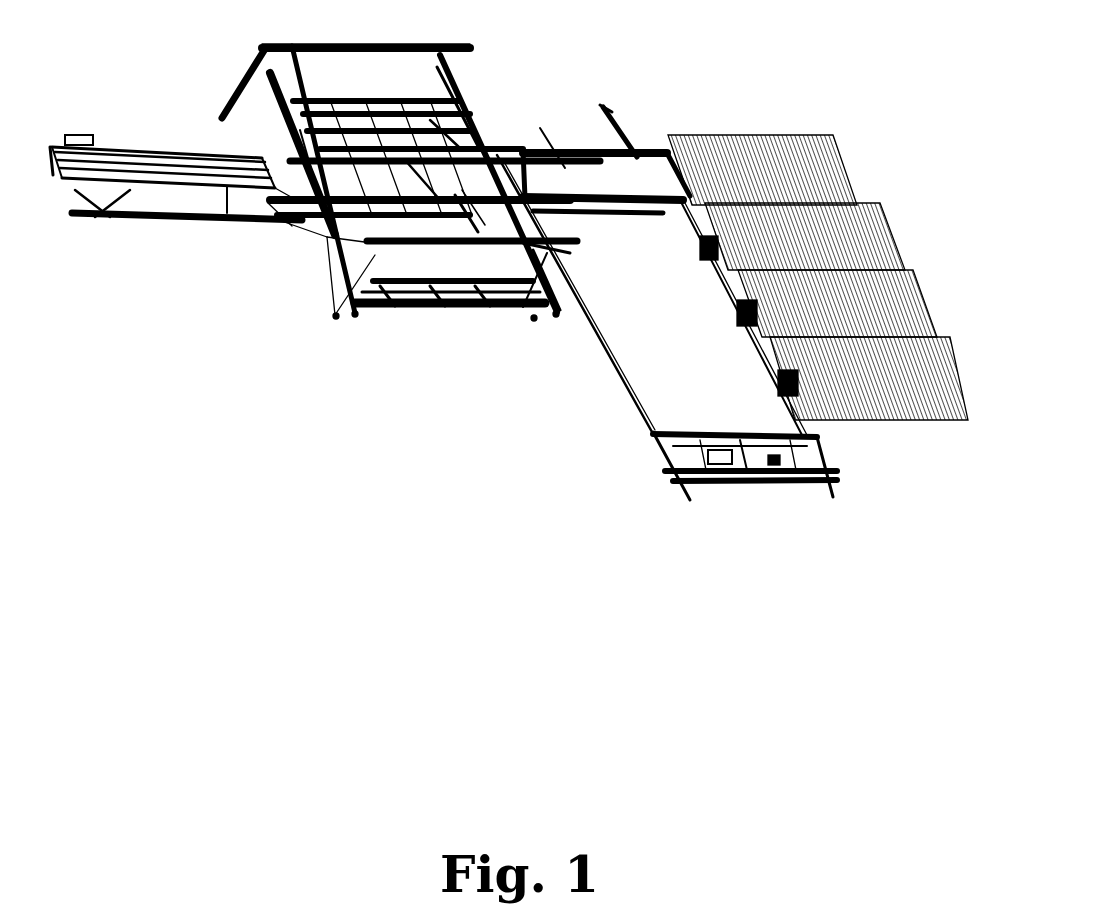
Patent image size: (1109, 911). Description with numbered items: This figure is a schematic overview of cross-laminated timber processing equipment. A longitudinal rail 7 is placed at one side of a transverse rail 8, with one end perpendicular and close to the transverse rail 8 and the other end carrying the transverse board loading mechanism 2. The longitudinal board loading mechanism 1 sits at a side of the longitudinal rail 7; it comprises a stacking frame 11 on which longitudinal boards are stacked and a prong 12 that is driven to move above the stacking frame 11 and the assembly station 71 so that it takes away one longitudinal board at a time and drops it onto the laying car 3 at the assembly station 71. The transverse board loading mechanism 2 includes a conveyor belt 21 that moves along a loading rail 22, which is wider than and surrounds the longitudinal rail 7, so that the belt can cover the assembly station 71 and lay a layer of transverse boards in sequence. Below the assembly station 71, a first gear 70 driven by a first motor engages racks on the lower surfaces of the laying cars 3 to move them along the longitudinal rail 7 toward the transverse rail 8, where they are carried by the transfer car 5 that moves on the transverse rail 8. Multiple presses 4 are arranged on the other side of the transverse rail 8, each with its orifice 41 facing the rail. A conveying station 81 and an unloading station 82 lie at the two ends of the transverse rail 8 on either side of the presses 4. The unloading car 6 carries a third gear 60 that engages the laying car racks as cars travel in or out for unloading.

The longitudinal board loading mechanism 1 is at (411, 195).
The stacking frame 11 is at (396, 313).
The prong 12 is at (363, 100).
The transverse board loading mechanism 2 is at (176, 170).
The conveyor belt 21 is at (176, 184).
The loading rail 22 is at (141, 221).
The laying car 3 is at (606, 138).
The press 4 is at (737, 137).
The orifice 41 is at (750, 317).
The transfer car 5 is at (610, 203).
The unloading car 6 is at (709, 460).
The third gear 60 is at (653, 431).
The longitudinal rail 7 is at (467, 218).
The first gear 70 is at (450, 137).
The assembly station 71 is at (427, 190).
The transverse rail 8 is at (576, 247).
The conveying station 81 is at (557, 132).
The unloading station 82 is at (667, 483).